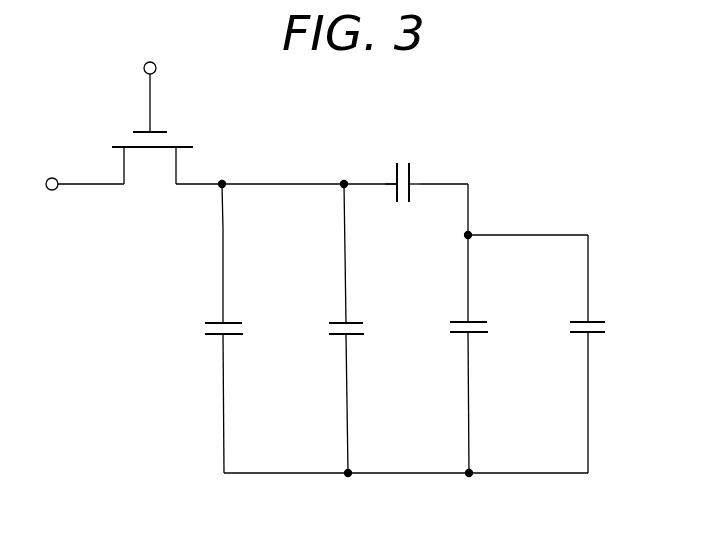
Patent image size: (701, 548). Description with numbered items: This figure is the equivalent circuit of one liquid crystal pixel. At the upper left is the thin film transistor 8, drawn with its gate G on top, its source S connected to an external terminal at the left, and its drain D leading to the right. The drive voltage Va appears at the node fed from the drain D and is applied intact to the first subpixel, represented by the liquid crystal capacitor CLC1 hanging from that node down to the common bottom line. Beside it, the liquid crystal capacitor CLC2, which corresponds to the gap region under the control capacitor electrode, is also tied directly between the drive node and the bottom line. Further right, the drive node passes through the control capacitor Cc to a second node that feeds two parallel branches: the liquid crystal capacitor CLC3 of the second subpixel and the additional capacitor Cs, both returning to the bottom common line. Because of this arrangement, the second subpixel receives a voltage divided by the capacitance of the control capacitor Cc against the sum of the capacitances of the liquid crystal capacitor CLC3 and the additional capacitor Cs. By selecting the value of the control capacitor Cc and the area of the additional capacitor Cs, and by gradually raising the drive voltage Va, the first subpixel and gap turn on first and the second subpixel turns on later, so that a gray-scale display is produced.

The thin film transistor 8 is at (134, 124).
The gate G is at (137, 117).
The source S is at (108, 175).
The drain electrode D is at (187, 175).
The drive voltage Va is at (206, 206).
The control capacitor Cc is at (402, 168).
The liquid crystal capacitor CLC1 is at (200, 351).
The liquid crystal capacitor CLC2 is at (327, 329).
The liquid crystal capacitor CLC3 is at (450, 356).
The additional capacitor Cs is at (572, 354).